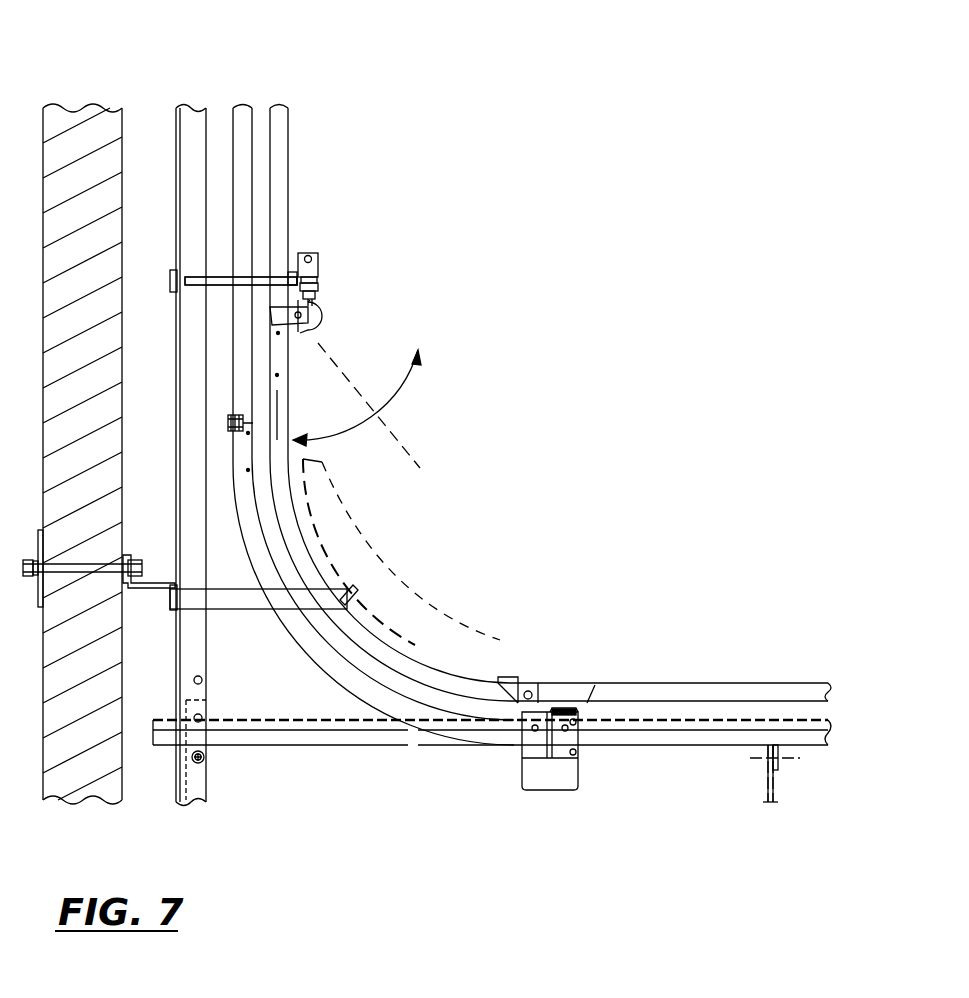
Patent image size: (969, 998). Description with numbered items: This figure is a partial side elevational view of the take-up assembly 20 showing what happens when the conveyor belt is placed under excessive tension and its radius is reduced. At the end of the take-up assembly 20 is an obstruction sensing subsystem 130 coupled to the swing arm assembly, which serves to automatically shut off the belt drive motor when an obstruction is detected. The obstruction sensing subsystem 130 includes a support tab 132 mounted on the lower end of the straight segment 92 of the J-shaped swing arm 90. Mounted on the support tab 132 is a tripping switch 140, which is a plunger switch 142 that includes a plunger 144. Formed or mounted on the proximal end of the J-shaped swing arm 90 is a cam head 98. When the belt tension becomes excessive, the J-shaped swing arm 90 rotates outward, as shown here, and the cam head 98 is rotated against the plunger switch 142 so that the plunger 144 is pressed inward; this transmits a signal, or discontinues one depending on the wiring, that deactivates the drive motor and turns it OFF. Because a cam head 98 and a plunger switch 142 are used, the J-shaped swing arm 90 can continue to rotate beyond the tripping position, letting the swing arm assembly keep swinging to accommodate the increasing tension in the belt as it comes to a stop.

The take-up assembly 20 is at (270, 125).
The straight segment 92 is at (288, 194).
The tripping switch 140 is at (352, 214).
The plunger switch 142 is at (300, 253).
The support tab 132 is at (318, 286).
The obstruction sensing subsystem 130 is at (437, 318).
The plunger 144 is at (322, 317).
The cam head 98 is at (324, 329).
The J-shaped swing arm 90 is at (403, 655).